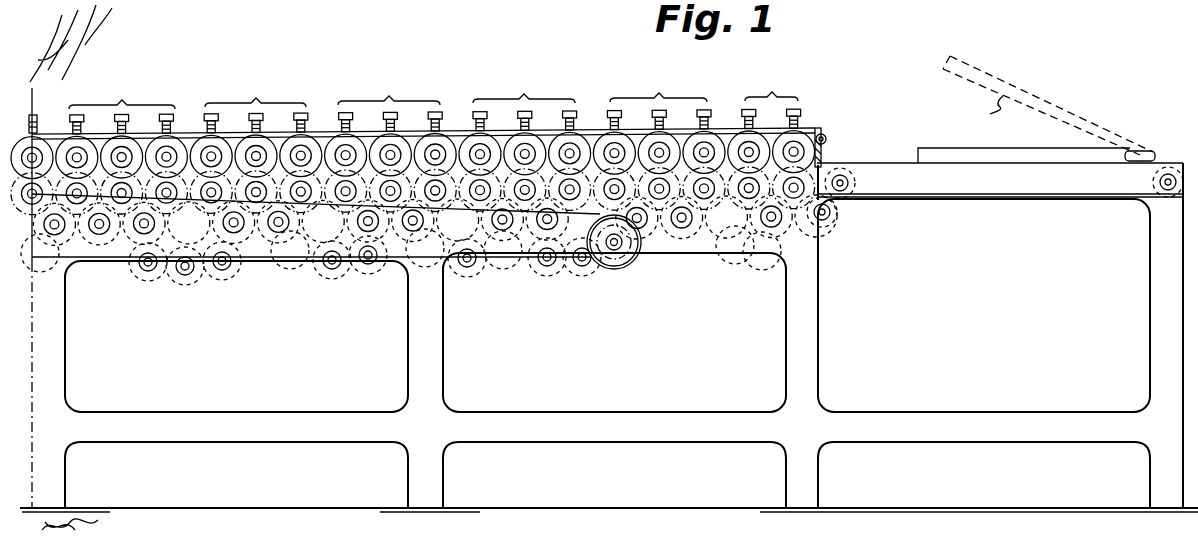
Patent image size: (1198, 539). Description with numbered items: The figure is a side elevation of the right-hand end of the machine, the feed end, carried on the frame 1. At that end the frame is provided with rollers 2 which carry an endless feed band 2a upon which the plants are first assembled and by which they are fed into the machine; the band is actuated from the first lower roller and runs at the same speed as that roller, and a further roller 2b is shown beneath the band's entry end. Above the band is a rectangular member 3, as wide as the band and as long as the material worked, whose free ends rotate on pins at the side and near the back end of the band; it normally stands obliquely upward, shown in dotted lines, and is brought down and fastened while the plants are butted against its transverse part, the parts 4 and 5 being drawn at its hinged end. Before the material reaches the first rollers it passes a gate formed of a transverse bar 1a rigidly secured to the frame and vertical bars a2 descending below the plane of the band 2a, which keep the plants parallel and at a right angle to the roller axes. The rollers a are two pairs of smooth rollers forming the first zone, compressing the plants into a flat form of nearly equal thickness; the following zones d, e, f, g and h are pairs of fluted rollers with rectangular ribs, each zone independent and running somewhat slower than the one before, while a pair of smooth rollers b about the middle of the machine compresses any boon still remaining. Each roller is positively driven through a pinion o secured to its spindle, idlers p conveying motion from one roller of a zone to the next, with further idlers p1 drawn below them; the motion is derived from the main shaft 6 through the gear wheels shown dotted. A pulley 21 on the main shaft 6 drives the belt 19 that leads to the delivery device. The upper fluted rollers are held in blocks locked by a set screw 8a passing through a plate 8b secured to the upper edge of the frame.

The frame 1 is at (609, 300).
The pinions o is at (206, 166).
The smooth rollers b is at (32, 152).
The zone of fluted rollers h is at (122, 147).
The zone of fluted rollers g is at (256, 144).
The set screw 8a is at (303, 112).
The zone of fluted rollers f is at (391, 142).
The plate 8b is at (447, 131).
The zone of fluted rollers e is at (525, 141).
The zone of fluted rollers d is at (659, 139).
The smooth rollers a is at (681, 268).
The idlers p is at (222, 224).
The bottom rollers p1 is at (432, 262).
The belt 19 is at (140, 265).
The main shaft 6 is at (614, 244).
The pulley 21 is at (630, 253).
The transverse bar 1a is at (826, 136).
The vertical bars a2 is at (823, 150).
The rollers 2 is at (856, 183).
The table roller 2b is at (838, 208).
The endless feed band 2a is at (967, 199).
The rectangular member 3 is at (966, 150).
The stop block 4 is at (1134, 152).
The hinge 5 is at (1157, 157).